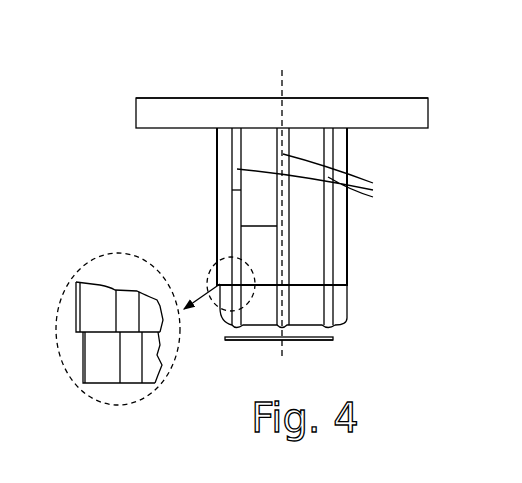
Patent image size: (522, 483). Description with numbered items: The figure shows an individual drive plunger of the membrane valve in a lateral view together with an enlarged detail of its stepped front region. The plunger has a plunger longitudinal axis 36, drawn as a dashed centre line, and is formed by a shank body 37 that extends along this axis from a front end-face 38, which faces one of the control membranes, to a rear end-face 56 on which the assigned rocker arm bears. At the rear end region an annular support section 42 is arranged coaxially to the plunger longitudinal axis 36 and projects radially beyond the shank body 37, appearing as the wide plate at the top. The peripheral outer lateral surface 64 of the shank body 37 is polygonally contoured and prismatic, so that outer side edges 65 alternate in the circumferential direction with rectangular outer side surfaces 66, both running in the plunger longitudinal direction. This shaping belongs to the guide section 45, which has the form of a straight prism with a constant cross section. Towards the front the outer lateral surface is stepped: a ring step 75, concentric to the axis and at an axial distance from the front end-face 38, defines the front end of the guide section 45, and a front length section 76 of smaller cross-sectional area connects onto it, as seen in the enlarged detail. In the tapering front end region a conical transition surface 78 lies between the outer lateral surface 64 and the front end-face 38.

The rear end-face 56 is at (192, 95).
The annular support section 42 is at (392, 113).
The plunger longitudinal axis 36 is at (283, 82).
The shank body 37 is at (255, 202).
The outer side surfaces 66 is at (290, 248).
The outer side edges 65 is at (324, 179).
The guide section 45 is at (311, 210).
The outer lateral surface 64 is at (341, 257).
The ring step 75 is at (310, 285).
The front length section 76 is at (90, 355).
The conical transition surface 78 is at (334, 338).
The front end-face 38 is at (317, 349).